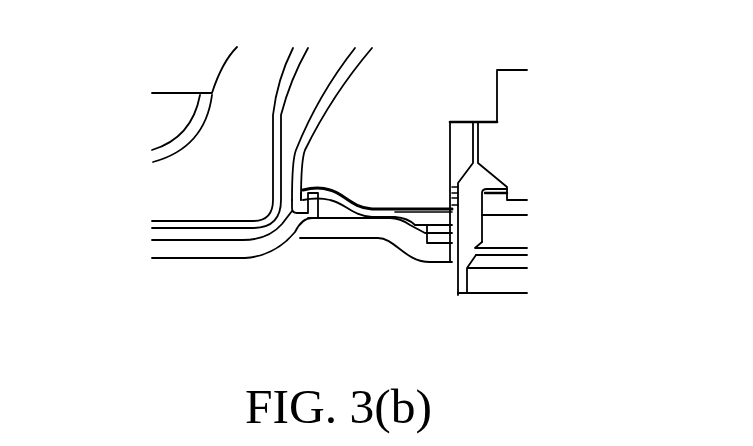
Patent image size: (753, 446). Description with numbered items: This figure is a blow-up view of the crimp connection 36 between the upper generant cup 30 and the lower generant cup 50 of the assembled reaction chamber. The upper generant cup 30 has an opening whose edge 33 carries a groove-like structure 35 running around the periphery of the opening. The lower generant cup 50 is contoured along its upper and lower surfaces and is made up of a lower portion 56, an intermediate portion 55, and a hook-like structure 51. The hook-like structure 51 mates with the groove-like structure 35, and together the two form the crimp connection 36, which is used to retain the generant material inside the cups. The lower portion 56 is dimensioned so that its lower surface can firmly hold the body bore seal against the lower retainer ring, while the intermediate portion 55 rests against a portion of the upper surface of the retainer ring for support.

The upper generant cup 30 is at (352, 67).
The edge 33 is at (283, 238).
The groove-like structure 35 is at (299, 213).
The crimp connection 36 is at (285, 202).
The lower generant cup 50 is at (380, 215).
The hook-like structure 51 is at (312, 192).
The intermediate portion 55 is at (375, 210).
The lower portion 56 is at (446, 225).